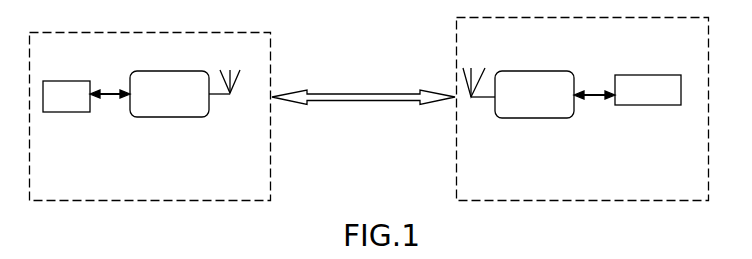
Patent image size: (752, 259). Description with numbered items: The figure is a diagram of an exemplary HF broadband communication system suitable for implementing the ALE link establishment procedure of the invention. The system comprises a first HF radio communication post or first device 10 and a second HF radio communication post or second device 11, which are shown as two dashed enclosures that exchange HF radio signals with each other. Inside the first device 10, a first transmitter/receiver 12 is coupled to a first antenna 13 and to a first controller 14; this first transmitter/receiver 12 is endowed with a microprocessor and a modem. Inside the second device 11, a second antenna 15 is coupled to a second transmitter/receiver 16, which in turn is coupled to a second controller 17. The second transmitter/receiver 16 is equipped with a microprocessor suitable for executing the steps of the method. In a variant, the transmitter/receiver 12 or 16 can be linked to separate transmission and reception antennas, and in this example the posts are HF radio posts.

The first HF radio communication post 10 is at (75, 201).
The second HF radio communication post 11 is at (517, 201).
The first transmitter/receiver 12 is at (148, 117).
The first antenna 13 is at (229, 67).
The first controller 14 is at (60, 112).
The second antenna 15 is at (469, 65).
The second transmitter/receiver 16 is at (540, 118).
The second controller 17 is at (647, 105).